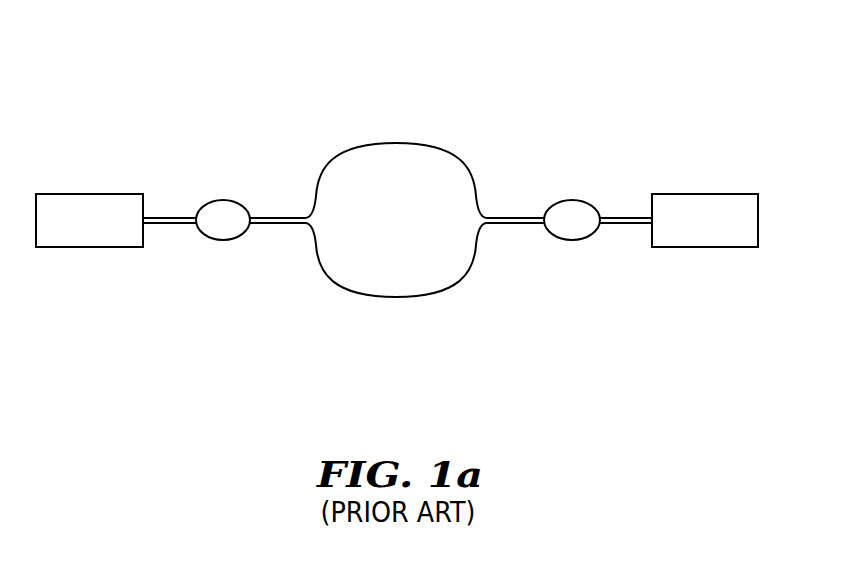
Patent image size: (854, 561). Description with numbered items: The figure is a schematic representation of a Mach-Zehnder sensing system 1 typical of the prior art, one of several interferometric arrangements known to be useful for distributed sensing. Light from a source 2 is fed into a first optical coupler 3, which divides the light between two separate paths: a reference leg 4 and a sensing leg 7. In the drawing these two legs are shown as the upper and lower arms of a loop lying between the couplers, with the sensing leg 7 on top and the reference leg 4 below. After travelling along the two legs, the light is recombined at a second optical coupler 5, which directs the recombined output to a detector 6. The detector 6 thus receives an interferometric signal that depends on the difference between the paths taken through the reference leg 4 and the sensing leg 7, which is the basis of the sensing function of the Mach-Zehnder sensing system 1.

The Mach-Zehnder sensing system 1 is at (228, 76).
The source 2 is at (73, 247).
The first optical coupler 3 is at (220, 240).
The reference leg 4 is at (390, 297).
The second optical coupler 5 is at (570, 240).
The detector 6 is at (703, 247).
The sensing leg 7 is at (420, 145).